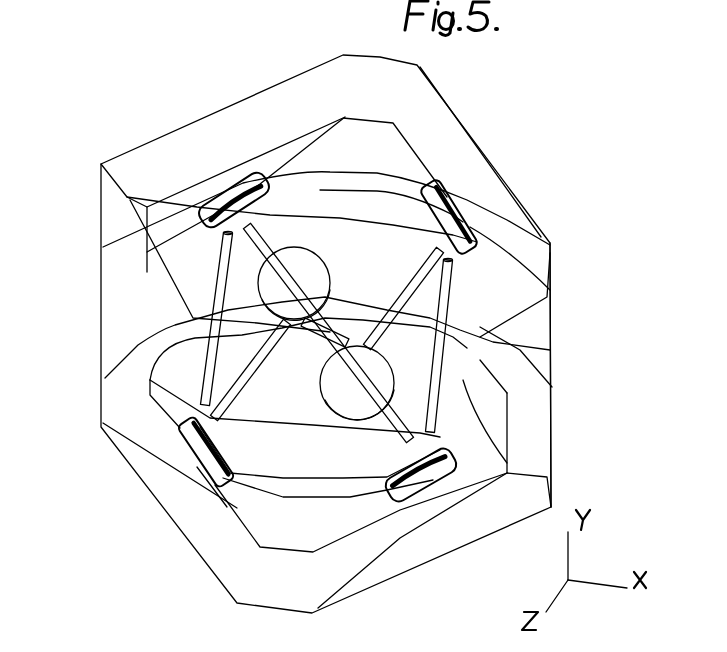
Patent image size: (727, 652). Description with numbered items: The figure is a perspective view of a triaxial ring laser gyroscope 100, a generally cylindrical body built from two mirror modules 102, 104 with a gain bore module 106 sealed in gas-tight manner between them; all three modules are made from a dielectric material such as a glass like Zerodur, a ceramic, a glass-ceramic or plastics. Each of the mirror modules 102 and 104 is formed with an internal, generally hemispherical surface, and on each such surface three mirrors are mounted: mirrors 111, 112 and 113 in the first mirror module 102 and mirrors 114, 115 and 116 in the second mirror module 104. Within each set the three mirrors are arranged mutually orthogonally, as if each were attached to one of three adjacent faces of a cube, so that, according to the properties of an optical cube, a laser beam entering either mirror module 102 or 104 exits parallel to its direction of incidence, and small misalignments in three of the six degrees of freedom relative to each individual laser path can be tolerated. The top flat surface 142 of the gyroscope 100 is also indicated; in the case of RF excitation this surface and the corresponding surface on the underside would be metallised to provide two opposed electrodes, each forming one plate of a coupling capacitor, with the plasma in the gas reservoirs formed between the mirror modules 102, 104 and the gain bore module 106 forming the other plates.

The triaxial ring laser gyroscope 100 is at (320, 326).
The mirror module 102 is at (339, 249).
The mirror module 104 is at (324, 452).
The gain bore module 106 is at (126, 400).
The mirror 111 is at (223, 152).
The mirror 112 is at (498, 213).
The mirror 113 is at (247, 332).
The mirror 114 is at (578, 375).
The mirror 115 is at (448, 508).
The mirror 116 is at (153, 457).
The top flat surface 142 is at (289, 188).